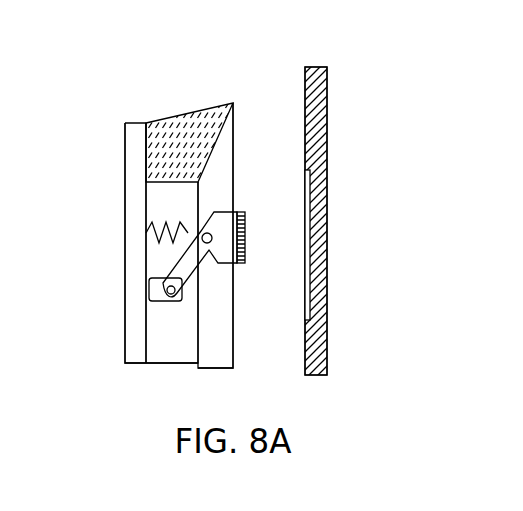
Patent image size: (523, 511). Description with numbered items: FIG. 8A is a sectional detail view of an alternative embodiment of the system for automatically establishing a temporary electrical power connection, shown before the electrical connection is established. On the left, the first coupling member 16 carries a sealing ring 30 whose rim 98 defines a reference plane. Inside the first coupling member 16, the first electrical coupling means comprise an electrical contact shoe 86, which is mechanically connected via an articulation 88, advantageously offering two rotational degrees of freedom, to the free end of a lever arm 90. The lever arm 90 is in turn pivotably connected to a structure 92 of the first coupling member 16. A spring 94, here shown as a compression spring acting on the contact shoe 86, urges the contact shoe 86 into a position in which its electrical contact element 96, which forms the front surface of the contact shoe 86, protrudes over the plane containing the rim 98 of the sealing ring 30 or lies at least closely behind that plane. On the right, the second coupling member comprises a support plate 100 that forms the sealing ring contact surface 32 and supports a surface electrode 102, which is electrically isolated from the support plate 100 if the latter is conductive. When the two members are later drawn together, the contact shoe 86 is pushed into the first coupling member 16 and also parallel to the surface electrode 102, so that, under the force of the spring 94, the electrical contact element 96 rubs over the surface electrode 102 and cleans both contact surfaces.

The first coupling member 16 is at (175, 90).
The sealing ring 30 is at (180, 142).
The sealing ring contact surface 32 is at (296, 108).
The electrical contact shoe 86 is at (234, 212).
The articulation 88 is at (207, 244).
The lever arm 90 is at (188, 265).
The structure 92 is at (137, 328).
The spring 94 is at (167, 222).
The electrical contact element 96 is at (246, 237).
The rim 98 is at (237, 132).
The support plate 100 is at (327, 100).
The surface electrode 102 is at (308, 206).